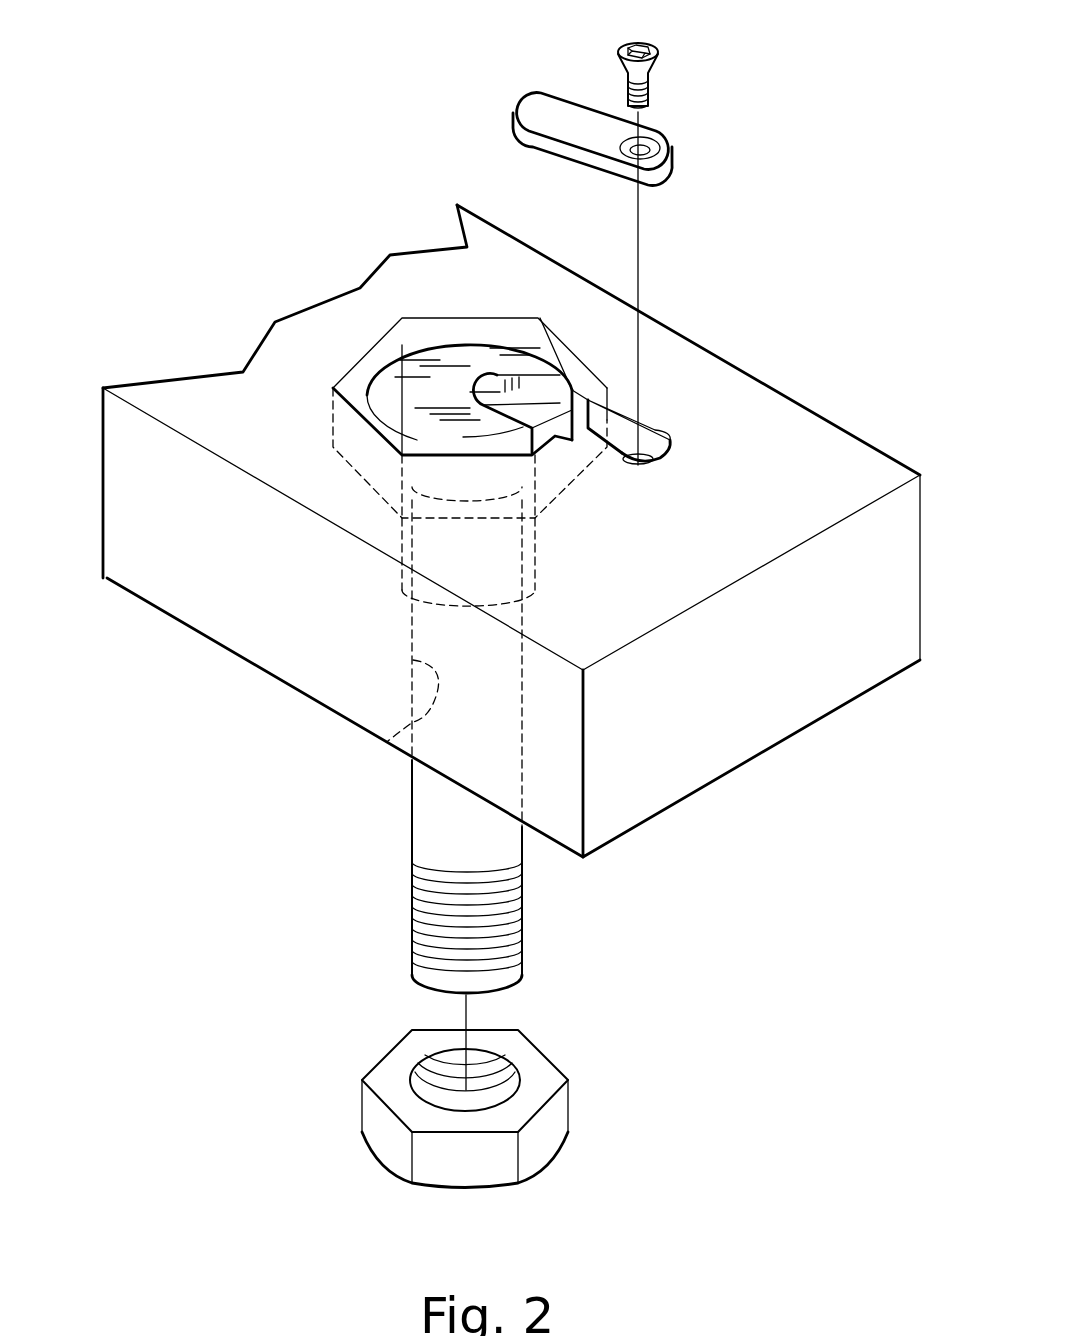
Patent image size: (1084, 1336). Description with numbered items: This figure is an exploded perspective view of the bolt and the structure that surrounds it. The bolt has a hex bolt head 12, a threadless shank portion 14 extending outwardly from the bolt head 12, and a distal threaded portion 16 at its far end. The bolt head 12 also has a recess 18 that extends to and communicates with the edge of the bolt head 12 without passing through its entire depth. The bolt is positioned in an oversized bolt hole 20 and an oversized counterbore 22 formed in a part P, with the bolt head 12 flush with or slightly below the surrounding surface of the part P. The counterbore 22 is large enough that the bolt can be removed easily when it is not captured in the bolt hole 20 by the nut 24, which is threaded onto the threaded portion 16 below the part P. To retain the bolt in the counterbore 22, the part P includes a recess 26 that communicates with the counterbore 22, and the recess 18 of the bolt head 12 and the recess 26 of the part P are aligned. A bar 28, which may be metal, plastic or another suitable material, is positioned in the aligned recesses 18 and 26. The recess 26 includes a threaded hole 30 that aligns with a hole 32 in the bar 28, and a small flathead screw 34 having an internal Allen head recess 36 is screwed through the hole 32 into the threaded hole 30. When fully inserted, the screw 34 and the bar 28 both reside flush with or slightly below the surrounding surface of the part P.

The part P is at (827, 463).
The bolt head 12 is at (460, 345).
The threadless shank portion 14 is at (430, 803).
The distal threaded portion 16 is at (512, 892).
The recess 18 is at (518, 408).
The oversized bolt hole 20 is at (385, 743).
The oversized counterbore 22 is at (359, 371).
The nut 24 is at (382, 1123).
The recess 26 is at (614, 443).
The bar 28 is at (553, 107).
The threaded hole 30 is at (664, 453).
The hole 32 is at (665, 138).
The flathead screw 34 is at (650, 97).
The internal Allen head recess 36 is at (660, 52).